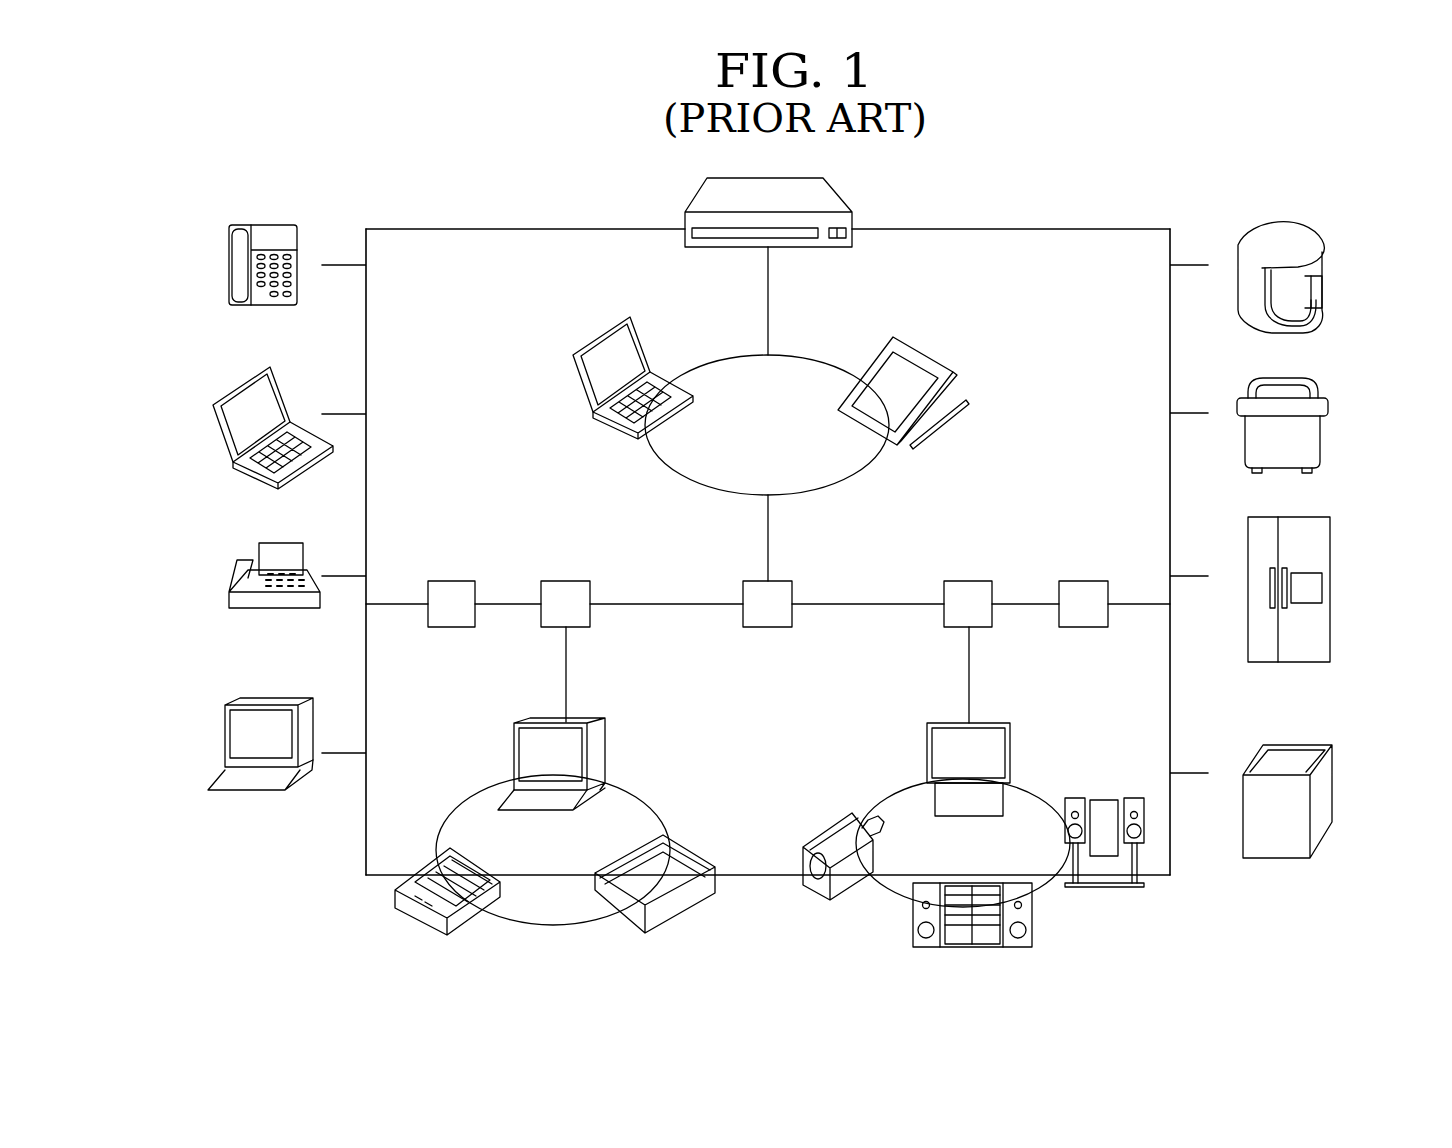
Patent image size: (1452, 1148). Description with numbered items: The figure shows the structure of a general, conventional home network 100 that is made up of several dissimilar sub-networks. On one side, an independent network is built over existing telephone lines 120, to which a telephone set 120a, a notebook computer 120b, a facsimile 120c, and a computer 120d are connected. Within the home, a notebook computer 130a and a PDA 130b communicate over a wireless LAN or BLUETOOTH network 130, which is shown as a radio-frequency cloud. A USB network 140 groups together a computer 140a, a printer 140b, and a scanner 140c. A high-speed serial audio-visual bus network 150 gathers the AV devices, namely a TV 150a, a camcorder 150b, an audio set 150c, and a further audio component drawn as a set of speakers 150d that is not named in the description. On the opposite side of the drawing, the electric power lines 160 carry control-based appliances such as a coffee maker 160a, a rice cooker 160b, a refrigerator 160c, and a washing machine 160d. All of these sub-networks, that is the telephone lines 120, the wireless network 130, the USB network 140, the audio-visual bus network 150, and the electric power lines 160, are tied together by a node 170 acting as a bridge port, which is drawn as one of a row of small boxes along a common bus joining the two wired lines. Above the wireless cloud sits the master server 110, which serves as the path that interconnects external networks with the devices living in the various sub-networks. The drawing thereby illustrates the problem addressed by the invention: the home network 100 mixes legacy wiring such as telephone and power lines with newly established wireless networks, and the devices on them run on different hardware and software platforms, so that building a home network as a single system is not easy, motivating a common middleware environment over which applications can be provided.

The home network 100 is at (900, 205).
The master server 110 is at (706, 193).
The telephone lines 120 is at (425, 228).
The telephone set 120a is at (238, 299).
The notebook computer 120b is at (238, 459).
The facsimile 120c is at (240, 601).
The computer 120d is at (238, 778).
The wireless LAN or BLUETOOTH network 130 is at (845, 490).
The notebook computer 130a is at (600, 417).
The PDA 130b is at (918, 374).
The USB network 140 is at (658, 797).
The computer 140a is at (516, 751).
The printer 140b is at (418, 915).
The scanner 140c is at (675, 908).
The IEEE 1394 network 150 is at (1045, 788).
The TV 150a is at (940, 752).
The camcorder 150b is at (820, 885).
The audio set 150c is at (917, 936).
The speakers 150d is at (1105, 875).
The electric power lines 160 is at (1059, 228).
The coffee maker 160a is at (1325, 311).
The rice cooker 160b is at (1315, 446).
The refrigerator 160c is at (1318, 651).
The washing machine 160d is at (1318, 826).
The node 170 is at (755, 581).